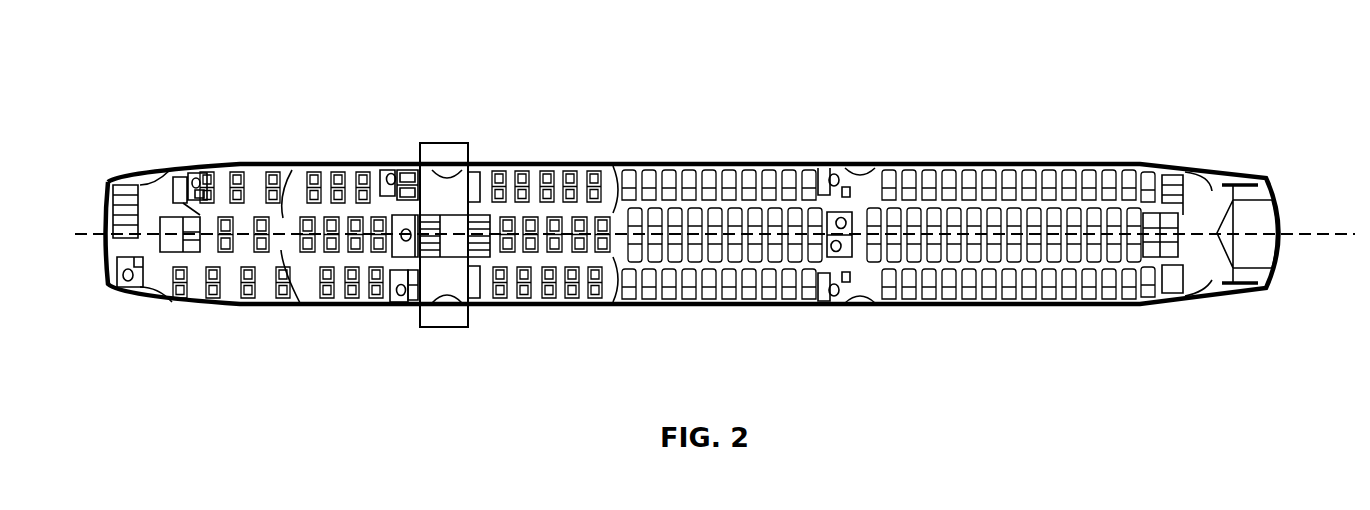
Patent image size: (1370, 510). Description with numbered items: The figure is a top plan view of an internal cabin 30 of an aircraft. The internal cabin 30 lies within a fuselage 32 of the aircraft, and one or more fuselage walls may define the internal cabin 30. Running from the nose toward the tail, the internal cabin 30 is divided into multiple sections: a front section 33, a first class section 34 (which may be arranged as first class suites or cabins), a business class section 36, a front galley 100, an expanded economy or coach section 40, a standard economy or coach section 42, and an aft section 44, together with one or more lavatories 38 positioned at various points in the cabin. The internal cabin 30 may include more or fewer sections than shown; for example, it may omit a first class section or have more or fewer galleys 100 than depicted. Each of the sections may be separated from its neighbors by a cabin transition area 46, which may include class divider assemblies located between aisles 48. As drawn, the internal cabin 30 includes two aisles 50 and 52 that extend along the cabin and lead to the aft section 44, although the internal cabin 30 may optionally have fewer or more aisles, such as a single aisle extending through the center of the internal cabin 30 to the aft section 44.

The internal cabin 30 is at (244, 78).
The fuselage 32 is at (562, 101).
The front section 33 is at (169, 316).
The first class section 34 is at (256, 305).
The business class section 36 is at (328, 165).
The lavatory 38 is at (404, 231).
The expanded economy or coach section 40 is at (540, 305).
The standard economy or coach section 42 is at (668, 165).
The aft section 44 is at (1208, 192).
The cabin transition area 46 is at (180, 165).
The aisle 48 is at (432, 203).
The aisle 50 is at (1012, 202).
The aisle 52 is at (1028, 270).
The front galley 100 is at (443, 328).